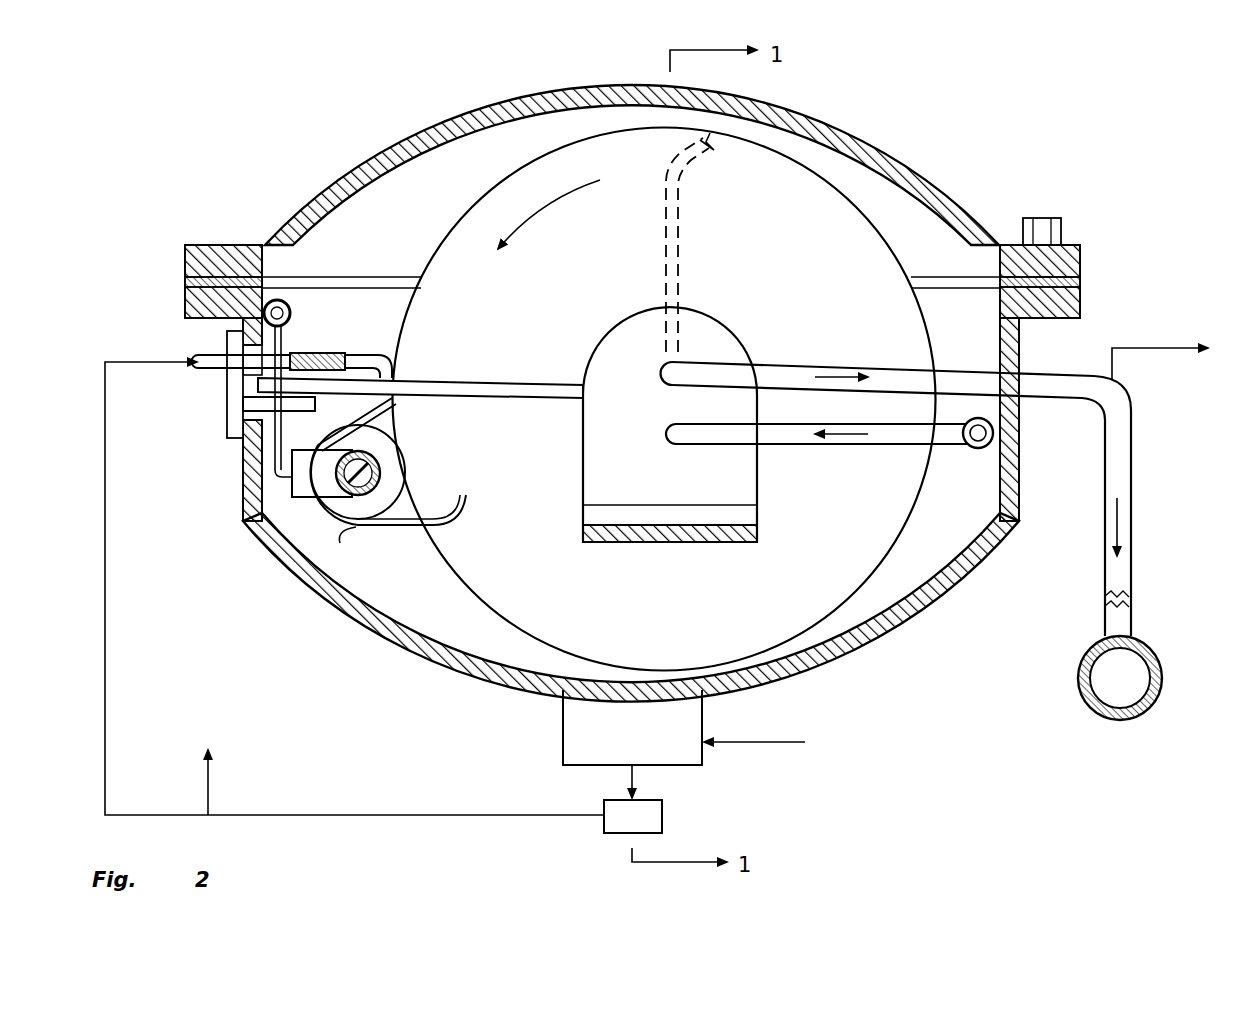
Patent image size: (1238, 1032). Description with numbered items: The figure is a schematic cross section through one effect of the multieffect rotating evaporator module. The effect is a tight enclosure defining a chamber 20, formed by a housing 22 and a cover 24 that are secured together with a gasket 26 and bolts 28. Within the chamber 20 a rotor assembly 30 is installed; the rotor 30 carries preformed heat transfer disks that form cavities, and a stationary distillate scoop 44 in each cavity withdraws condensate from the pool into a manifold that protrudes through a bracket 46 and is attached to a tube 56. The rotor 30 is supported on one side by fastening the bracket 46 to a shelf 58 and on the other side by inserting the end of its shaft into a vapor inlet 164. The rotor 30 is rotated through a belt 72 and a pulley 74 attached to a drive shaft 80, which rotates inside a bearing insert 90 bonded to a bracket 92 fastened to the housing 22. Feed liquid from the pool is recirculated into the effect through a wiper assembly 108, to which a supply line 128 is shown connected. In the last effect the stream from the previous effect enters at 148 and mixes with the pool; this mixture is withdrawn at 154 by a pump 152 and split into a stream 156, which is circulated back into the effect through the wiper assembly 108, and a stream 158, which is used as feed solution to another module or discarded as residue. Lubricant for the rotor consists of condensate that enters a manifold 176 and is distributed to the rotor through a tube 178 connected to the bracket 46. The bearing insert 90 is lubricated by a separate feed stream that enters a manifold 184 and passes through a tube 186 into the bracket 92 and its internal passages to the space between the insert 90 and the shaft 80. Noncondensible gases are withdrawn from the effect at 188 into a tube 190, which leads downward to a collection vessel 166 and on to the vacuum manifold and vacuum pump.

The chamber 20 is at (409, 230).
The housing 22 is at (910, 619).
The cover 24 is at (870, 140).
The gasket 26 is at (1080, 282).
The bolts 28 is at (1040, 218).
The rotor assembly 30 is at (489, 196).
The distillate scoop 44 is at (680, 246).
The bracket 46 is at (583, 456).
The tube 56 is at (812, 365).
The shelf 58 is at (704, 543).
The belt 72 is at (434, 526).
The pulley 74 is at (405, 520).
The shaft 80 is at (360, 530).
The bearing insert 90 is at (388, 462).
The bracket 92 is at (312, 498).
The wiper assembly 108 is at (226, 410).
The feed inlet line 128 is at (226, 370).
The last effect inlet 148 is at (705, 742).
The pump 152 is at (664, 812).
The pump withdrawal point 154 is at (630, 778).
The recirculation stream 156 is at (354, 588).
The residue stream 158 is at (304, 769).
The vapor inlet 164 is at (1020, 375).
The collection vessel 166 is at (1150, 702).
The manifold 176 is at (974, 449).
The tube 178 is at (806, 446).
The manifold 184 is at (292, 308).
The tube 186 is at (285, 346).
The noncondensible gas withdrawal point 188 is at (1112, 380).
The tube 190 is at (1162, 345).